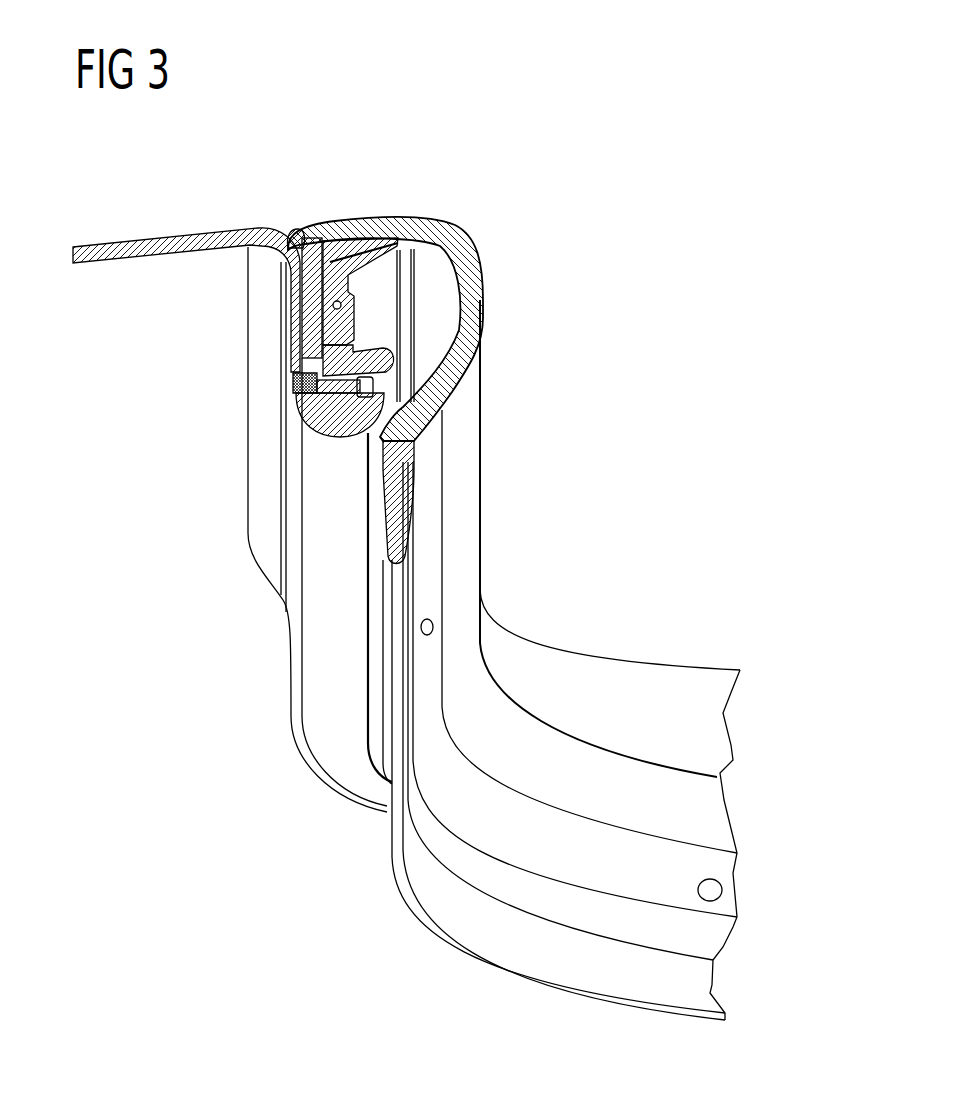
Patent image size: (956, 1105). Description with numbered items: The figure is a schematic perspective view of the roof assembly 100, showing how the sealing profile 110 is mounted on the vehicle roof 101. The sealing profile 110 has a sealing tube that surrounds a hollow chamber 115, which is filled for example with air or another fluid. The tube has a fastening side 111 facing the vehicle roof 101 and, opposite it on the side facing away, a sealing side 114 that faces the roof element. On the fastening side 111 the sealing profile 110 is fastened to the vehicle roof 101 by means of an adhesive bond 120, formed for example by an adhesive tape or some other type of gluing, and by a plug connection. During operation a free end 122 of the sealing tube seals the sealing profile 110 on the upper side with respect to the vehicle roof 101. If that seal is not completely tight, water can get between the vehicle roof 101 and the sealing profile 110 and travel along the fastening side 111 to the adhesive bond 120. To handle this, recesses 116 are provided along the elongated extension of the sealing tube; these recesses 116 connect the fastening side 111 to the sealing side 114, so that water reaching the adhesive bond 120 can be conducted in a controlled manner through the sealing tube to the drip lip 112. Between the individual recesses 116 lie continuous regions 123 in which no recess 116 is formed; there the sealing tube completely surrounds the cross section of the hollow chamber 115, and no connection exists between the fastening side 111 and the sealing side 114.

The roof assembly 100 is at (593, 150).
The vehicle roof 101 is at (256, 390).
The sealing profile 110 is at (468, 434).
The fastening side 111 is at (340, 258).
The drip lip 112 is at (420, 537).
The sealing side 114 is at (495, 384).
The hollow chamber 115 is at (441, 284).
The recess 116 is at (390, 407).
The adhesive bond 120 is at (324, 240).
The free end 122 is at (290, 232).
The continuous region 123 is at (447, 487).